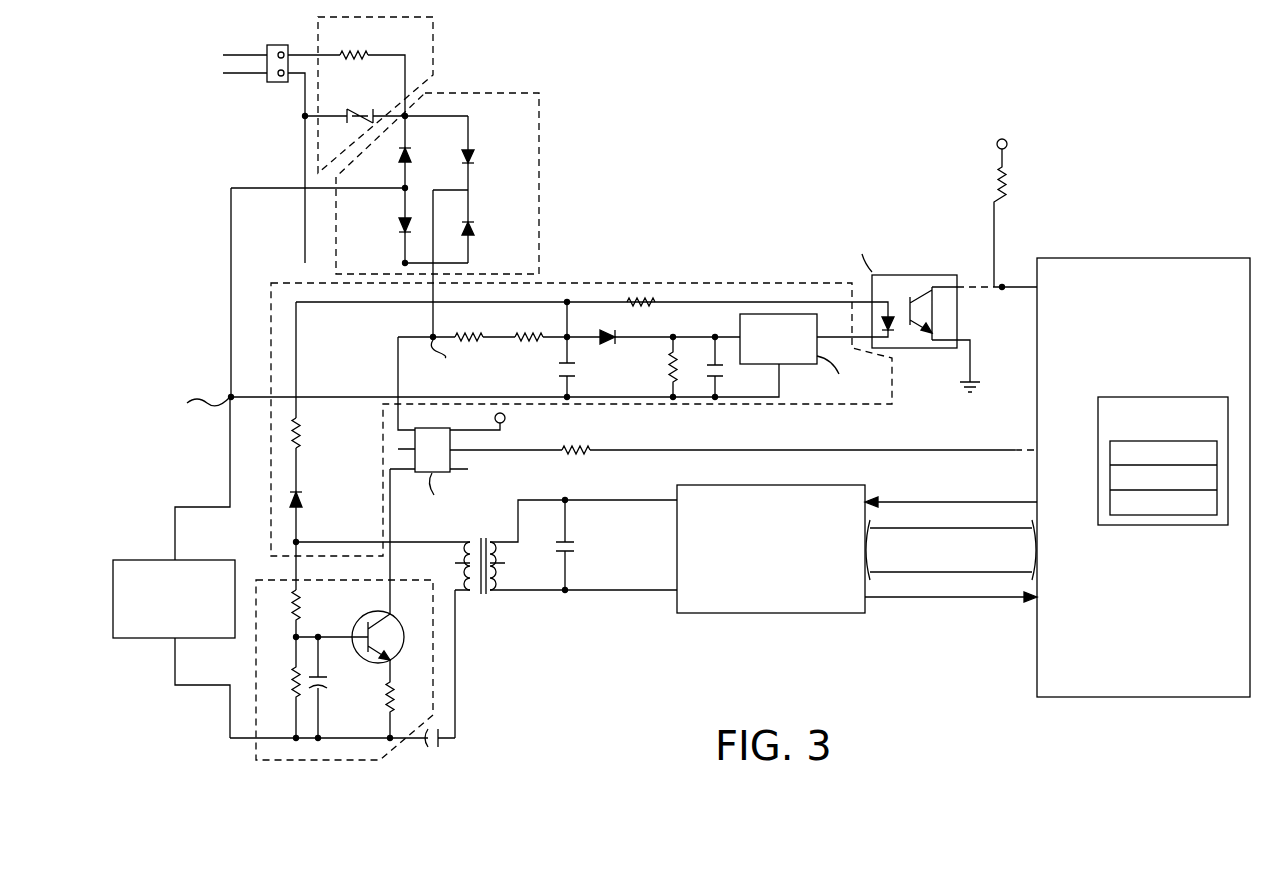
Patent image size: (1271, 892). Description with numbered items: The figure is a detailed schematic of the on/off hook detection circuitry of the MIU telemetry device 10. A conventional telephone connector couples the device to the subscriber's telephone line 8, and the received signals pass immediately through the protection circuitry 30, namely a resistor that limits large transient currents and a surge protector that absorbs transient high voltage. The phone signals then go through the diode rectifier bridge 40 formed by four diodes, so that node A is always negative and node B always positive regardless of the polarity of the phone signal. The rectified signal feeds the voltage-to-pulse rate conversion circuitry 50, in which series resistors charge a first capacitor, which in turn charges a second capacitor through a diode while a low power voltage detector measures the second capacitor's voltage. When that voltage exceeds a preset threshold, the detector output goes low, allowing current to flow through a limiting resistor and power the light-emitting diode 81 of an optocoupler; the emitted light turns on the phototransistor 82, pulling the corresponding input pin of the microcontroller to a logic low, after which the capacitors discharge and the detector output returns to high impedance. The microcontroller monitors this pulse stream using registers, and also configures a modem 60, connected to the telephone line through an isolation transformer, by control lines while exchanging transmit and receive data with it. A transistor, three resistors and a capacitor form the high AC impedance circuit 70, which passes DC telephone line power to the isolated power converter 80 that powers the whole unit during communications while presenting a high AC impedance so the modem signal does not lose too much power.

The telephone line 8 is at (208, 69).
The MIU telemetry device 10 is at (674, 393).
The protection circuitry 30 is at (433, 52).
The diode rectifier bridge 40 is at (540, 192).
The voltage-to-pulse rate conversion circuitry 50 is at (735, 283).
The modem 60 is at (782, 615).
The high AC impedance circuit 70 is at (434, 660).
The isolated power converter 80 is at (145, 642).
The light-emitting diode 81 is at (893, 317).
The phototransistor 82 is at (920, 302).